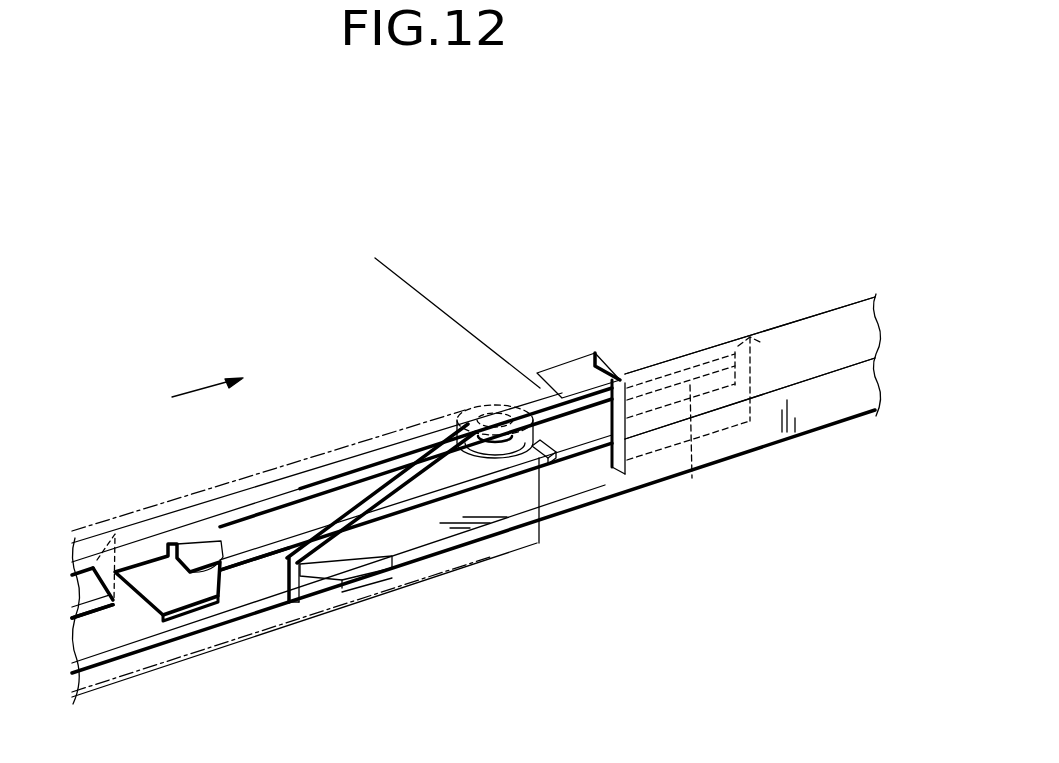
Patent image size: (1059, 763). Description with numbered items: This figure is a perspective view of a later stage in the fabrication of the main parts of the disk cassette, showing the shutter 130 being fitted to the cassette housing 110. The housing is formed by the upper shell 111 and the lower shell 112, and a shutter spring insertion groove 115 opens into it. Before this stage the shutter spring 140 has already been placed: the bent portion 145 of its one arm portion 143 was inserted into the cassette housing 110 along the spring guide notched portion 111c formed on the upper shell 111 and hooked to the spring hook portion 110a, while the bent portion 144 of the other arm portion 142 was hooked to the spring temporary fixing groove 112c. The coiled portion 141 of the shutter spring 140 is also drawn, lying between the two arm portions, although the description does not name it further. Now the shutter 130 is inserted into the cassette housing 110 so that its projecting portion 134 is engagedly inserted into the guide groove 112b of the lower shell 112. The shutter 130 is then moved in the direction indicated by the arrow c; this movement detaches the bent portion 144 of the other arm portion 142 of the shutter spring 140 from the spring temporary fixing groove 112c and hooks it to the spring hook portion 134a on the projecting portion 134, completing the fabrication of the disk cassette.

The cassette housing 110 is at (609, 270).
The spring hook portion 110a is at (662, 378).
The upper shell 111 is at (816, 329).
The spring guide notched portion 111c is at (576, 374).
The lower shell 112 is at (813, 424).
The guide groove 112b is at (275, 535).
The spring temporary fixing groove 112c is at (330, 599).
The shutter spring insertion groove 115 is at (564, 466).
The shutter 130 is at (408, 299).
The projecting portion 134 is at (182, 599).
The spring hook portion 134a is at (195, 555).
The shutter spring 140 is at (455, 597).
The roller 141 is at (485, 402).
The other arm portion 142 is at (345, 500).
The one arm portion 143 is at (692, 478).
The bent portion 144 is at (290, 606).
The bent portion 145 is at (737, 341).
The arrow c is at (194, 389).